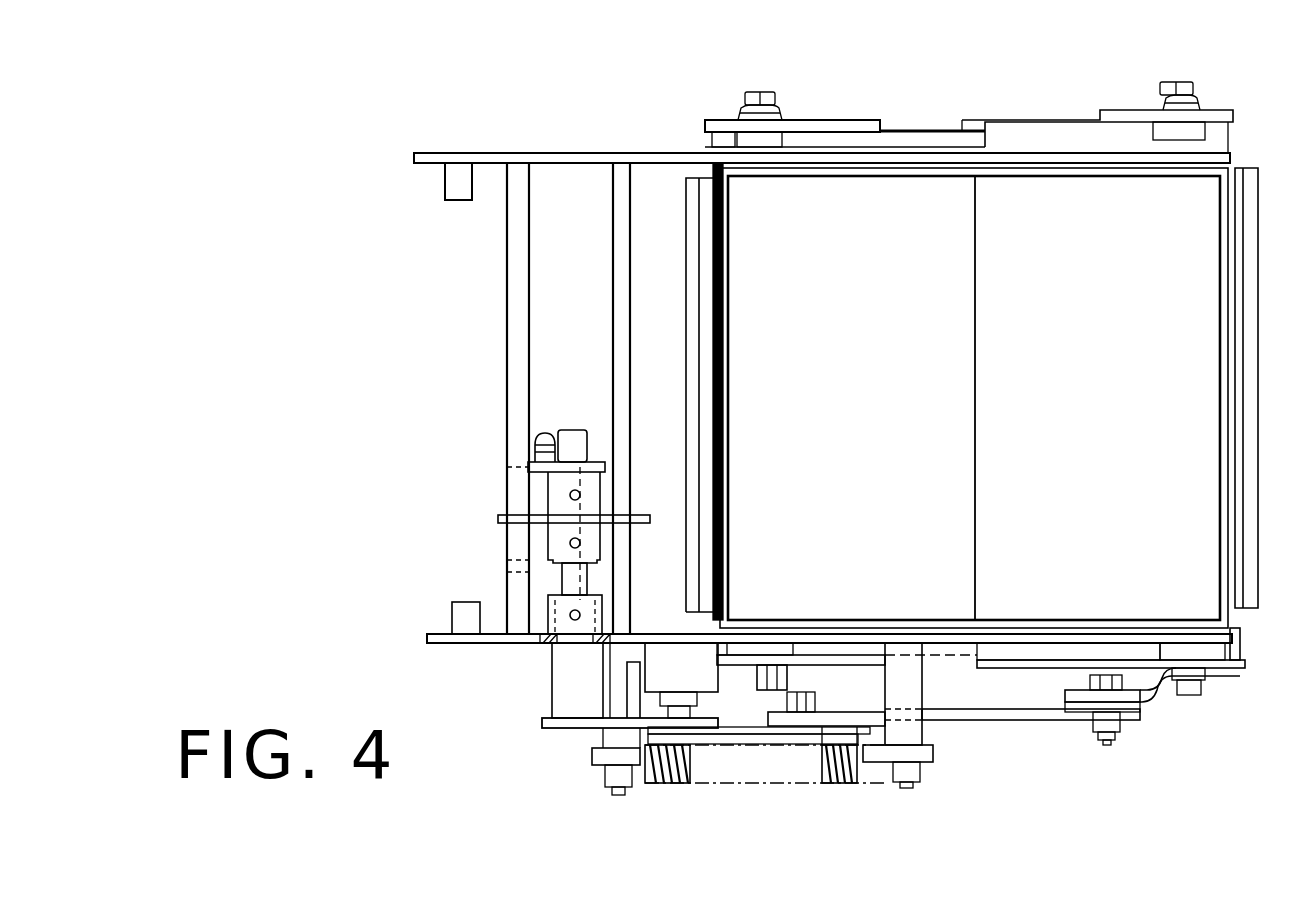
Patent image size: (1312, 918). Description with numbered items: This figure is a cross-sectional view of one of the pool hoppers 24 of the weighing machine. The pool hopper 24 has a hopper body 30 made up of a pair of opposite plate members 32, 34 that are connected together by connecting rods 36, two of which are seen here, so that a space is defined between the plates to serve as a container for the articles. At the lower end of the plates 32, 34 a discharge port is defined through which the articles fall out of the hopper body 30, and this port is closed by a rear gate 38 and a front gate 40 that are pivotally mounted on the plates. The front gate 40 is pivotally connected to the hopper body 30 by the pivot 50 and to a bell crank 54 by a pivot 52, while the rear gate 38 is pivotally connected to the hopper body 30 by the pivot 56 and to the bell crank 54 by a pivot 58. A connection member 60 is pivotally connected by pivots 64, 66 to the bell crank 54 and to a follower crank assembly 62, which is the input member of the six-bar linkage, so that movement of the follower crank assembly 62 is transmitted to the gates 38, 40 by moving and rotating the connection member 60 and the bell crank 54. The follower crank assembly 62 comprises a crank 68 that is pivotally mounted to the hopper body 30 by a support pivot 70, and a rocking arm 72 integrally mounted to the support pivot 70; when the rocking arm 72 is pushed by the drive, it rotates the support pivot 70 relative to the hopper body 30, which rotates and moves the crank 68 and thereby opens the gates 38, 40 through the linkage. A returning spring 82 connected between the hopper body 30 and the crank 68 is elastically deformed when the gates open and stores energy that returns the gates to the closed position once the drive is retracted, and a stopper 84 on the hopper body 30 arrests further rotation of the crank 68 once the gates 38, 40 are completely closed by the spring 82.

The pool hopper 24 is at (996, 100).
The hopper body 30 is at (434, 148).
The plate member 32 is at (452, 648).
The plate member 34 is at (467, 162).
The connecting rods 36 is at (616, 300).
The rear gate 38 is at (902, 215).
The front gate 40 is at (1045, 195).
The pivot 50 is at (1190, 700).
The pivot 52 is at (1118, 746).
The bell crank 54 is at (1046, 712).
The pivot 56 is at (790, 680).
The pivot 58 is at (888, 764).
The connection member 60 is at (740, 745).
The follower crank assembly 62 is at (545, 692).
The pivot 64 is at (831, 752).
The pivot 66 is at (706, 752).
The crank 68 is at (572, 732).
The support pivot 70 is at (567, 430).
The rocking arm 72 is at (540, 480).
The returning spring 82 is at (866, 762).
The stopper 84 is at (660, 683).